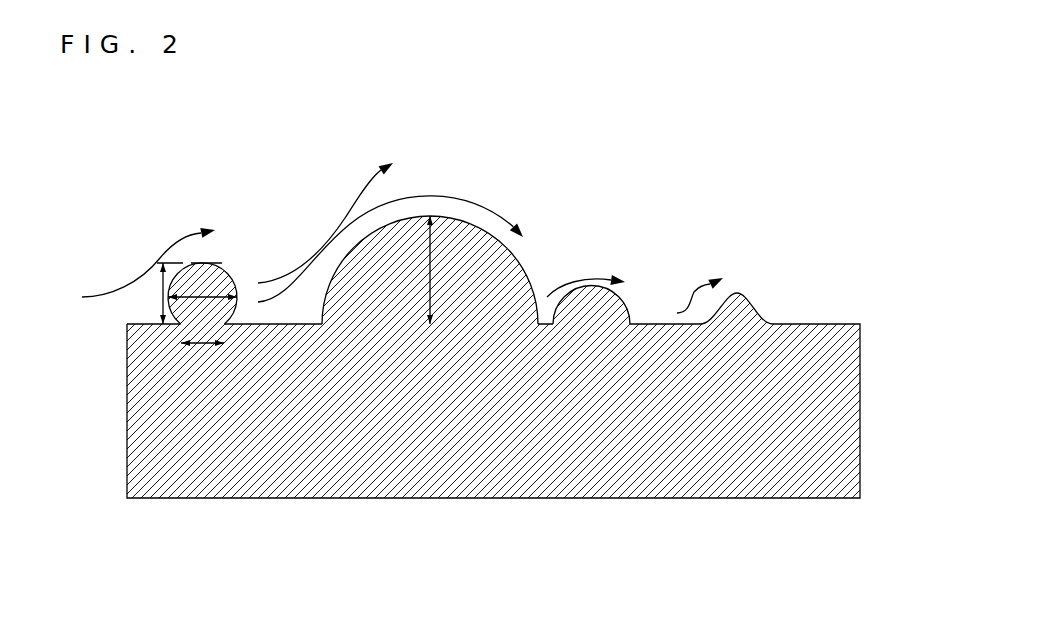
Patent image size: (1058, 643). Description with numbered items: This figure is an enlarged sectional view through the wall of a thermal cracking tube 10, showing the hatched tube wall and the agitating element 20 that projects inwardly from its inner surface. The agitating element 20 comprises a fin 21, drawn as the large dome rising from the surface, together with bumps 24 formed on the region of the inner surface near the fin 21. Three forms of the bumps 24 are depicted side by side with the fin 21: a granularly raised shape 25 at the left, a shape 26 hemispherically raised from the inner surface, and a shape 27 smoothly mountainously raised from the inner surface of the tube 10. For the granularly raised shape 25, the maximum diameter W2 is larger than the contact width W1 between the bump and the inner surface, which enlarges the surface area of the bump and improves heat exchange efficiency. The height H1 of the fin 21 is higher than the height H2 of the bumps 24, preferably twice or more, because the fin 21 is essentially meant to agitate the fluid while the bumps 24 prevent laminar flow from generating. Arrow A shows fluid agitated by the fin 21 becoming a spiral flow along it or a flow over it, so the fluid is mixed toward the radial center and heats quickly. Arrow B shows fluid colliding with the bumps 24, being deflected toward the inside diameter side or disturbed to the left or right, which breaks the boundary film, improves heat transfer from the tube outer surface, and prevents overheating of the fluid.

The thermal cracking tube 10 is at (800, 408).
The agitating element 20 is at (903, 147).
The fin 21 is at (521, 272).
The bumps 24 is at (470, 210).
The granularly raised shape 25 is at (231, 278).
The hemispherically raised shape 26 is at (628, 307).
The smoothly mountainously raised shape 27 is at (757, 307).
The arrow A is at (343, 215).
The arrow B is at (141, 282).
The height of the fin H1 is at (430, 297).
The height of the bump H2 is at (163, 305).
The contact width W1 is at (186, 350).
The maximum diameter of the bump W2 is at (236, 305).